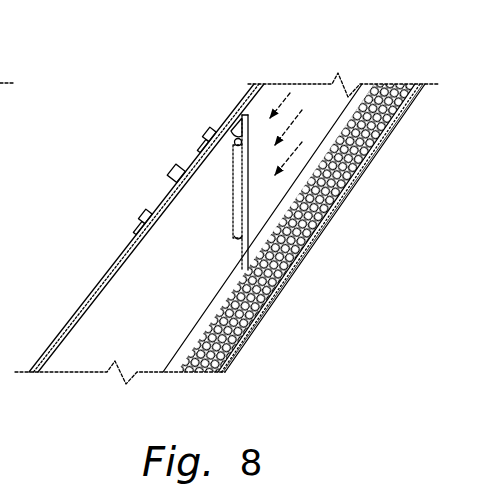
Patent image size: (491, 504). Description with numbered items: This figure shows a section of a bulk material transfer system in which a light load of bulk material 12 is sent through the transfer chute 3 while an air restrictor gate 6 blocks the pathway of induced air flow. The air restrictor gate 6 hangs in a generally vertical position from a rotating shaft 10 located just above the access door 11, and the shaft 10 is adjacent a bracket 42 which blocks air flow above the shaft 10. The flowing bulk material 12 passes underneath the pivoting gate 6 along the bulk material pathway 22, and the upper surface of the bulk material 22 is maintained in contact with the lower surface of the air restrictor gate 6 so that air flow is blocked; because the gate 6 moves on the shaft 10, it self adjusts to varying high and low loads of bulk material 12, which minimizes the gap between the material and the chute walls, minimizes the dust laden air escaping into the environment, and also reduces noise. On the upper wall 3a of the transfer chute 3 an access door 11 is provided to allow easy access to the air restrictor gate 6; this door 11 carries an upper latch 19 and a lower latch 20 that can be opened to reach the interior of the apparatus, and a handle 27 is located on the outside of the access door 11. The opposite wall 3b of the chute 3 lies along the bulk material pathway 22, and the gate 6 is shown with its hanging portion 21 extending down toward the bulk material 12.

The transfer chute 3 is at (81, 349).
The upper wall 3a is at (100, 282).
The inner wall layer 3b is at (267, 305).
The air restrictor gate 6 is at (220, 227).
The rotating shaft 10 is at (243, 109).
The access door 11 is at (108, 123).
The bulk material 12 is at (306, 255).
The upper latch 19 is at (207, 130).
The lower latch 20 is at (142, 215).
The clip 21 is at (233, 187).
The bulk material pathway 22 is at (368, 155).
The handle 27 is at (163, 169).
The bracket 42 is at (230, 124).